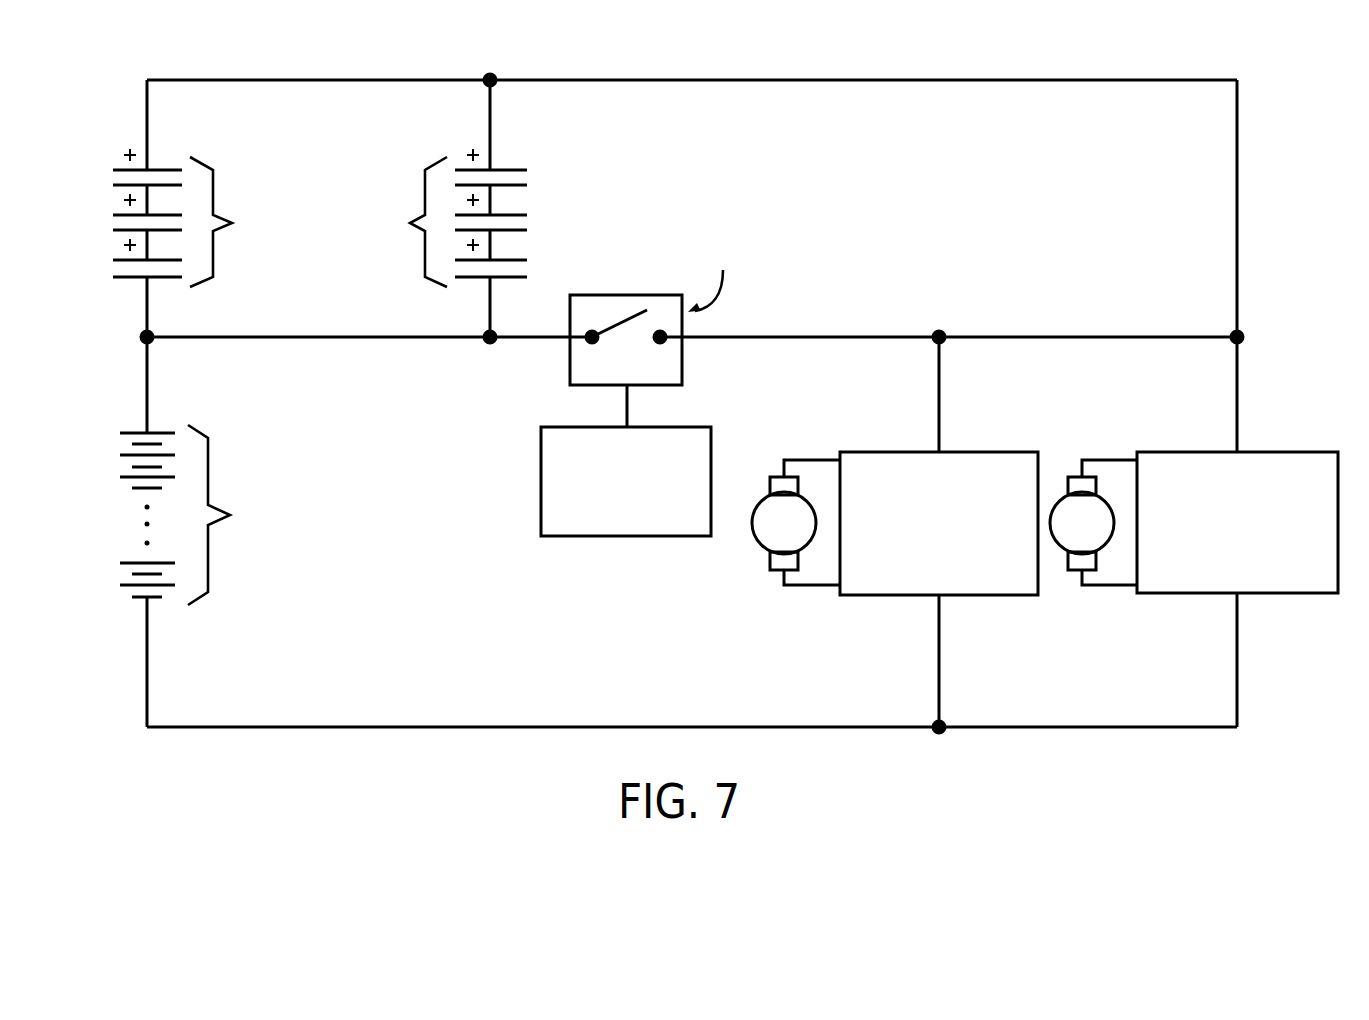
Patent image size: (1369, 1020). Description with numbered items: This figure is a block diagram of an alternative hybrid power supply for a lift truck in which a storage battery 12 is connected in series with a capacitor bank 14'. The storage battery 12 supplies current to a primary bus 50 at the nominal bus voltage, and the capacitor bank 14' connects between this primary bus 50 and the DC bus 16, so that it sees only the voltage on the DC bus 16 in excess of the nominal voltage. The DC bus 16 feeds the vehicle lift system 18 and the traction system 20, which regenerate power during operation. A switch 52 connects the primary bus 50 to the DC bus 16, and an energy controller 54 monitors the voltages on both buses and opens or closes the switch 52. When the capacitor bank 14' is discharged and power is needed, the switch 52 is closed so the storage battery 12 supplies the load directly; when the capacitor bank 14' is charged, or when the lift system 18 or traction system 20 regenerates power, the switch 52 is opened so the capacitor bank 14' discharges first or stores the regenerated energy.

The storage battery 12 is at (132, 519).
The capacitor bank 14' is at (321, 208).
The DC bus 16 is at (1135, 337).
The lift system 18 is at (1285, 594).
The traction system 20 is at (997, 596).
The primary bus 50 is at (336, 338).
The switch 52 is at (689, 274).
The energy controller 54 is at (620, 537).